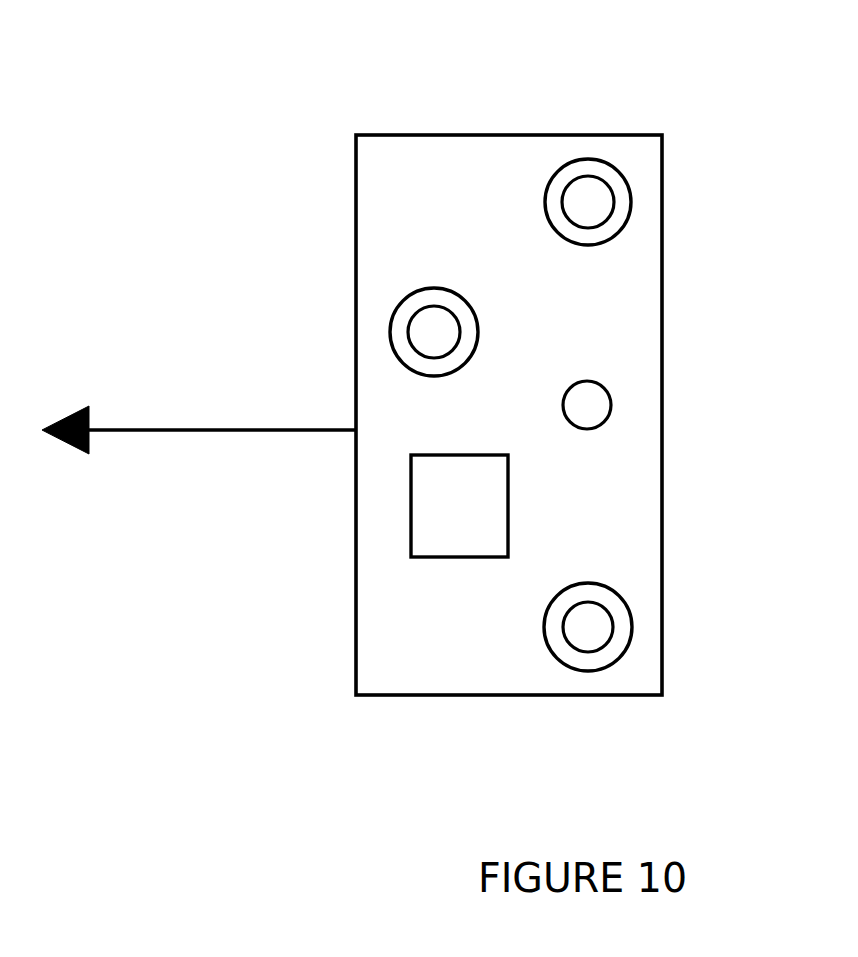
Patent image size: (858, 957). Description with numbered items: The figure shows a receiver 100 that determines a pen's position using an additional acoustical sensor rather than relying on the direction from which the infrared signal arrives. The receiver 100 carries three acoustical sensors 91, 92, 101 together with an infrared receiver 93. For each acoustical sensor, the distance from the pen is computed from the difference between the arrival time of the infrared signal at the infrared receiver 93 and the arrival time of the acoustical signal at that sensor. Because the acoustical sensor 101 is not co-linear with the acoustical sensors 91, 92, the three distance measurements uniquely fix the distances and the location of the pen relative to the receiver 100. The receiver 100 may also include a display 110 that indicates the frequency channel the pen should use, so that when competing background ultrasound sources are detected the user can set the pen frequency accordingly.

The receiver 100 is at (633, 287).
The acoustical sensor 91 is at (588, 163).
The acoustical sensor 92 is at (583, 662).
The infrared receiver 93 is at (610, 393).
The acoustical sensor 101 is at (418, 297).
The display 110 is at (437, 548).